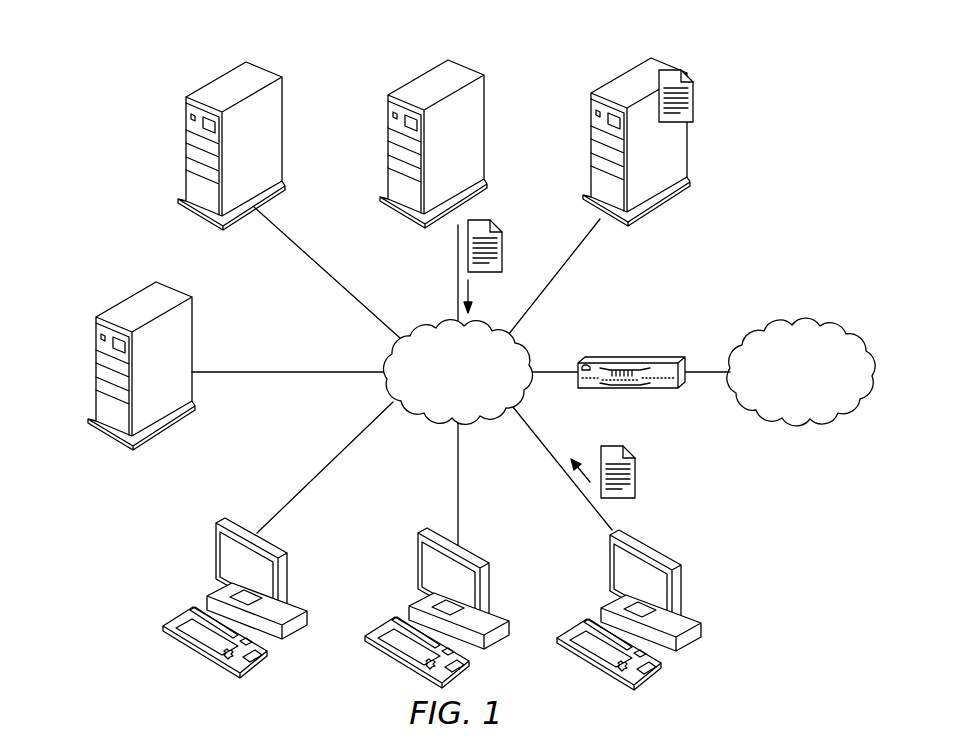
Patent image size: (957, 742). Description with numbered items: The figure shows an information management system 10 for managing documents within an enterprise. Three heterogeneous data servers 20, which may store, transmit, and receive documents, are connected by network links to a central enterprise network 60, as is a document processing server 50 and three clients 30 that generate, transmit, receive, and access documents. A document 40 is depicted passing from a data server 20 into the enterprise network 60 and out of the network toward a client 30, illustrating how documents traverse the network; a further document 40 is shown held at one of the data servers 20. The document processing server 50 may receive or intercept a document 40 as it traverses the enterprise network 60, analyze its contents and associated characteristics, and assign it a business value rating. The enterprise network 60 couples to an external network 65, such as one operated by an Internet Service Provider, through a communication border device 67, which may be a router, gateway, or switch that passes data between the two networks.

The information management system 10 is at (112, 48).
The data server 20 is at (217, 78).
The client 30 is at (215, 550).
The document 40 is at (694, 102).
The document processing server 50 is at (127, 298).
The enterprise network 60 is at (445, 384).
The external network 65 is at (788, 384).
The communication border device 67 is at (632, 362).